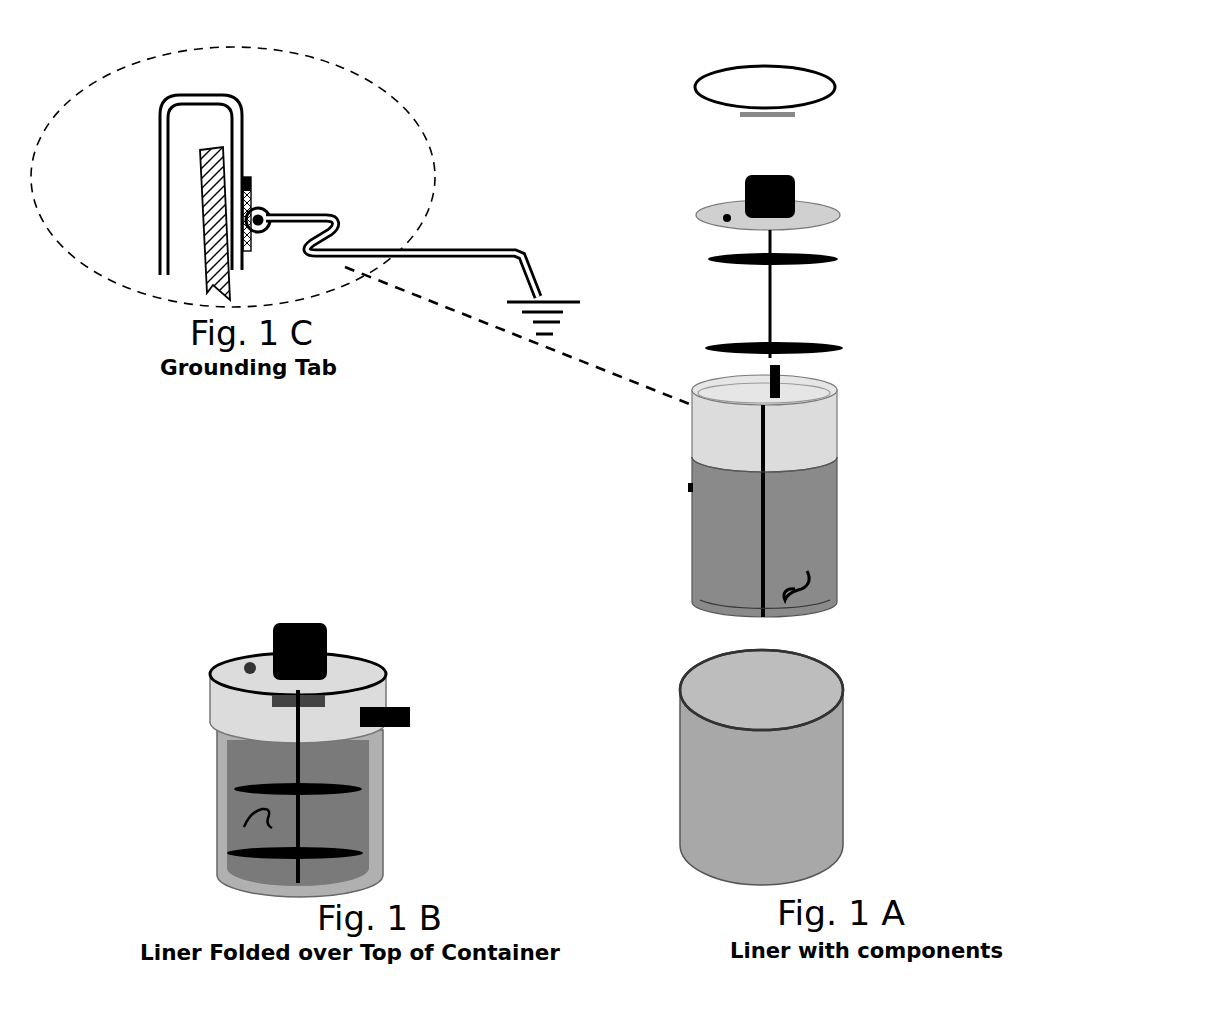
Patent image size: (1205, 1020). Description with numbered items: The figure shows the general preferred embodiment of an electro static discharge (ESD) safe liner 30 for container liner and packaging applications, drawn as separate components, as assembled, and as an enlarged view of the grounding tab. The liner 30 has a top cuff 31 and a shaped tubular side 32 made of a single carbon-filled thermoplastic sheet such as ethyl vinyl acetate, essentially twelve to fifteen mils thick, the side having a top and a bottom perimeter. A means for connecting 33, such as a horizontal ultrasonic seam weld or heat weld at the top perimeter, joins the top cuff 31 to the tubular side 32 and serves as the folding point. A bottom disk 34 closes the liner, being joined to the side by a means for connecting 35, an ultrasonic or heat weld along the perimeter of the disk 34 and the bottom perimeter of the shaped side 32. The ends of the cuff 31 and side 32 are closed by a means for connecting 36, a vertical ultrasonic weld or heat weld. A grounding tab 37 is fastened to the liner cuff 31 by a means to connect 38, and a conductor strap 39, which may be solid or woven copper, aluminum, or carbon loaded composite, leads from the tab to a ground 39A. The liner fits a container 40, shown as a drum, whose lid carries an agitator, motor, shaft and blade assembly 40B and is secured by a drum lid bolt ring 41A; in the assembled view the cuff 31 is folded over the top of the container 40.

In FIG. 1A, the electro static discharge (ESD) safe liner 30 is at (884, 508).
In FIG. 1B, the electro static discharge (ESD) safe liner 30 is at (291, 760).
In FIG. 1C, the top cuff 31 is at (236, 148).
In FIG. 1B, the top cuff 31 is at (233, 703).
In FIG. 1A, the shaped tubular side 32 is at (790, 503).
In FIG. 1B, the shaped tubular side 32 is at (240, 825).
In FIG. 1A, the means for connecting top cuff to tubular side 33 is at (787, 463).
In FIG. 1A, the bottom disk 34 is at (825, 597).
In FIG. 1A, the means for connecting bottom disk to tubular side 35 is at (807, 590).
In FIG. 1A, the means for connecting ends or vertical seam 36 is at (767, 432).
In FIG. 1C, the grounding tab 37 is at (270, 211).
In FIG. 1A, the grounding tab 37 is at (780, 375).
In FIG. 1B, the grounding tab 37 is at (407, 713).
In FIG. 1C, the means to connect grounding tab to liner cuff 38 is at (249, 192).
In FIG. 1C, the conductor strap 39 is at (445, 241).
In FIG. 1C, the ground 39A is at (587, 305).
In FIG. 1C, the container 40 is at (205, 207).
In FIG. 1A, the container 40 is at (784, 767).
In FIG. 1A, the agitator, motor, shaft and blade assembly 40B is at (830, 367).
In FIG. 1B, the agitator, motor, shaft and blade assembly 40B is at (277, 650).
In FIG. 1A, the drum lid bolt ring 41A is at (813, 102).